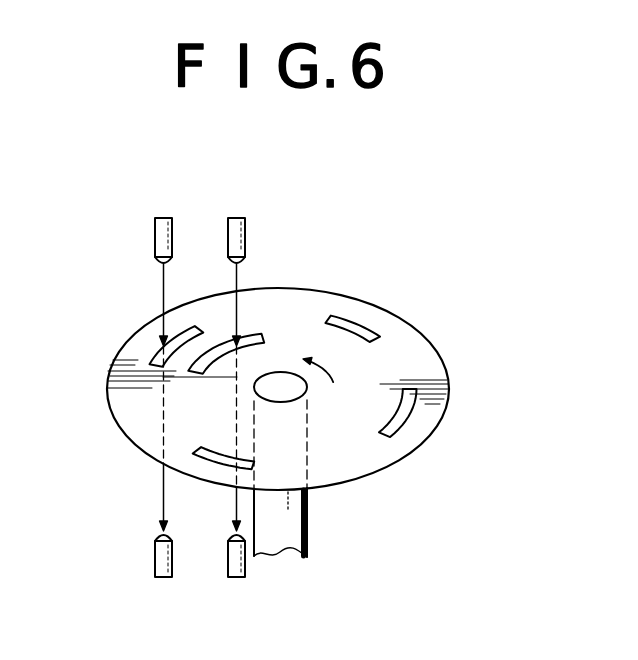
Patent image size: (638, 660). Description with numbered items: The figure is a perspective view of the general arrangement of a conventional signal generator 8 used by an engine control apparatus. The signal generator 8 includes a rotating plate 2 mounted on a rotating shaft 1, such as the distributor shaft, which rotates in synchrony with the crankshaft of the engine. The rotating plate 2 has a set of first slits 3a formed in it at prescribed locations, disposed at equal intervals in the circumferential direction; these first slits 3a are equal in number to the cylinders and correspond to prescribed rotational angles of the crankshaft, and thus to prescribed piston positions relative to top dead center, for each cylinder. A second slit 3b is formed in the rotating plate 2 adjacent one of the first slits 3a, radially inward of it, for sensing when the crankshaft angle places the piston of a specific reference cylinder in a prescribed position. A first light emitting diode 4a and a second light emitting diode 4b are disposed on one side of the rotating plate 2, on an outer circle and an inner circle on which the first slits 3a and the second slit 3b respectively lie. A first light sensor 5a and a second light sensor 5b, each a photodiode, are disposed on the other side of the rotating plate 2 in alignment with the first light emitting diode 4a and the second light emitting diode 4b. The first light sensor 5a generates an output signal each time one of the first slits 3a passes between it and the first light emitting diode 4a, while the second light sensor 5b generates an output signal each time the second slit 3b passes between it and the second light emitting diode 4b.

The rotating shaft 1 is at (308, 516).
The rotating plate 2 is at (441, 356).
The first slits 3a is at (162, 354).
The second slit 3b is at (266, 338).
The first light emitting diode 4a is at (155, 234).
The second light emitting diode 4b is at (246, 238).
The first light sensor 5a is at (155, 558).
The second light sensor 5b is at (246, 566).
The signal generator 8 is at (385, 478).